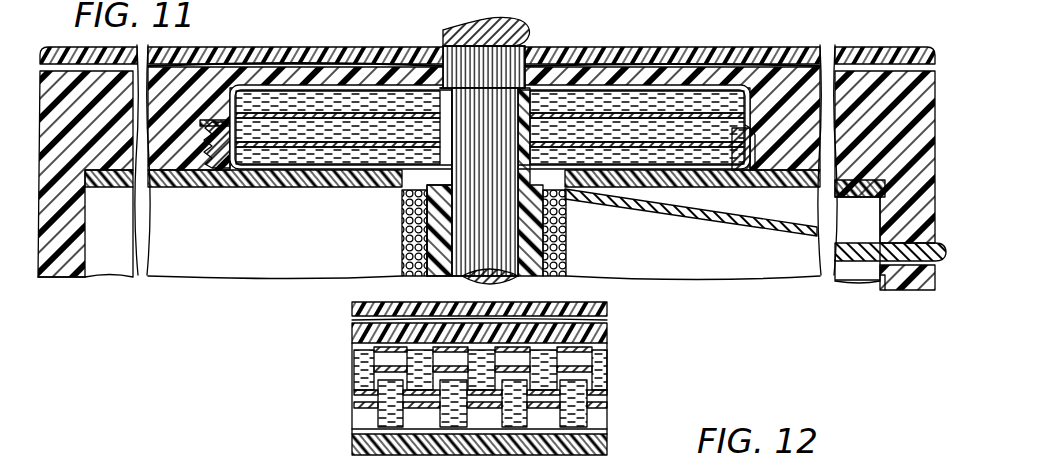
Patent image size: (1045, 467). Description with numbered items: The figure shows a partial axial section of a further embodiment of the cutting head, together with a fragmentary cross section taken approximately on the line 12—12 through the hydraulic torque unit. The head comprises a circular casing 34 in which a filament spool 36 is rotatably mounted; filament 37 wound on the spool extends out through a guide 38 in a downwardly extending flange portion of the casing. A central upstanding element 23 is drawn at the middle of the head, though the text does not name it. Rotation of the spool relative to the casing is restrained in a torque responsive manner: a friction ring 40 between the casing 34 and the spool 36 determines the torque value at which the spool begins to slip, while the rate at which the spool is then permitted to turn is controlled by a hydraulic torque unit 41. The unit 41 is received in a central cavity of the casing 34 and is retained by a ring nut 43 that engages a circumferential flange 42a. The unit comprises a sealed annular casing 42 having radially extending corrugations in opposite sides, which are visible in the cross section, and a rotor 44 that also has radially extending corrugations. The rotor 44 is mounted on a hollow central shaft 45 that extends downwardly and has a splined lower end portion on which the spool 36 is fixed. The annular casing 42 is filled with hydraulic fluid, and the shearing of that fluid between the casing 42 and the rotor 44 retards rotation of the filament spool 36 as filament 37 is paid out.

In FIG. 11, the section line 12— 12 is at (628, 12).
In FIG. 11, the stud 23 is at (446, 40).
In FIG. 11, the circular casing 34 is at (862, 90).
In FIG. 12, the circular casing 34 is at (605, 337).
In FIG. 11, the filament spool 36 is at (262, 188).
In FIG. 12, the filament spool 36 is at (352, 445).
In FIG. 11, the filament 37 is at (738, 221).
In FIG. 11, the guide 38 is at (936, 285).
In FIG. 11, the friction ring 40 is at (868, 178).
In FIG. 11, the hydraulic torque unit 41 is at (682, 86).
In FIG. 12, the hydraulic torque unit 41 is at (346, 354).
In FIG. 11, the sealed annular casing 42 is at (328, 166).
In FIG. 12, the sealed annular casing 42 is at (607, 408).
In FIG. 11, the circumferential flange 42a is at (748, 130).
In FIG. 11, the ring nut 43 is at (205, 168).
In FIG. 11, the rotor 44 is at (380, 142).
In FIG. 12, the rotor 44 is at (352, 396).
In FIG. 11, the hollow central shaft 45 is at (440, 86).